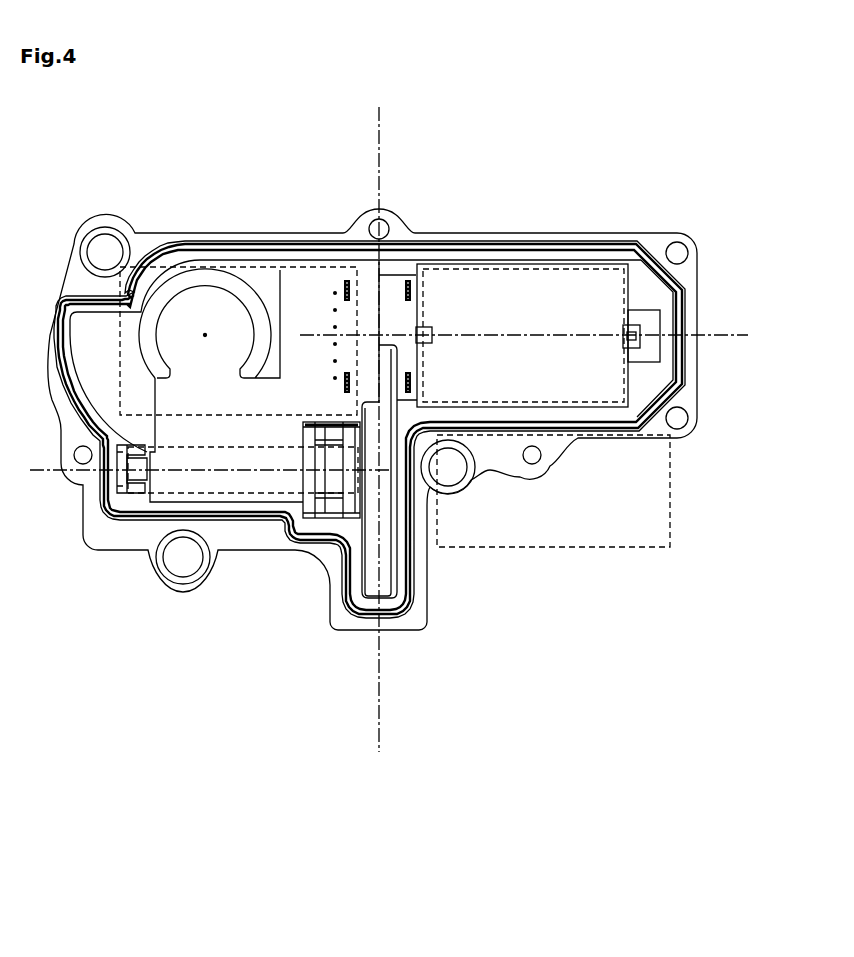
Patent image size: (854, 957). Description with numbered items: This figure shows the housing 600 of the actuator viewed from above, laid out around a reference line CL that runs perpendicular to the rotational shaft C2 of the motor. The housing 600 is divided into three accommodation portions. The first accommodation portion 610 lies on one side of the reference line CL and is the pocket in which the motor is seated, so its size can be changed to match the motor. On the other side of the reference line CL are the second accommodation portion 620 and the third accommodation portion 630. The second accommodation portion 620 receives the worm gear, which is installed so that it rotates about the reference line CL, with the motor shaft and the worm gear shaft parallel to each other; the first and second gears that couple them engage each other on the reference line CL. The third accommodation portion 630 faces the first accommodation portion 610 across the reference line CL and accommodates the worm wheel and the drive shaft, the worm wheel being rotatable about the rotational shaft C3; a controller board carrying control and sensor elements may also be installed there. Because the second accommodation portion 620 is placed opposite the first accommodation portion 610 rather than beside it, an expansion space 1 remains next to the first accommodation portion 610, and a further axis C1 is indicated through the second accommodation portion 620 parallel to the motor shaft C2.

The housing 600 is at (510, 232).
The first accommodation portion 610 is at (597, 267).
The second accommodation portion 620 is at (135, 495).
The third accommodation portion 630 is at (268, 264).
The space 1 is at (566, 549).
The reference line CL is at (381, 115).
The first axis line C1 is at (36, 474).
The rotational shaft of the motor C2 is at (729, 340).
The rotational shaft C3 is at (205, 334).